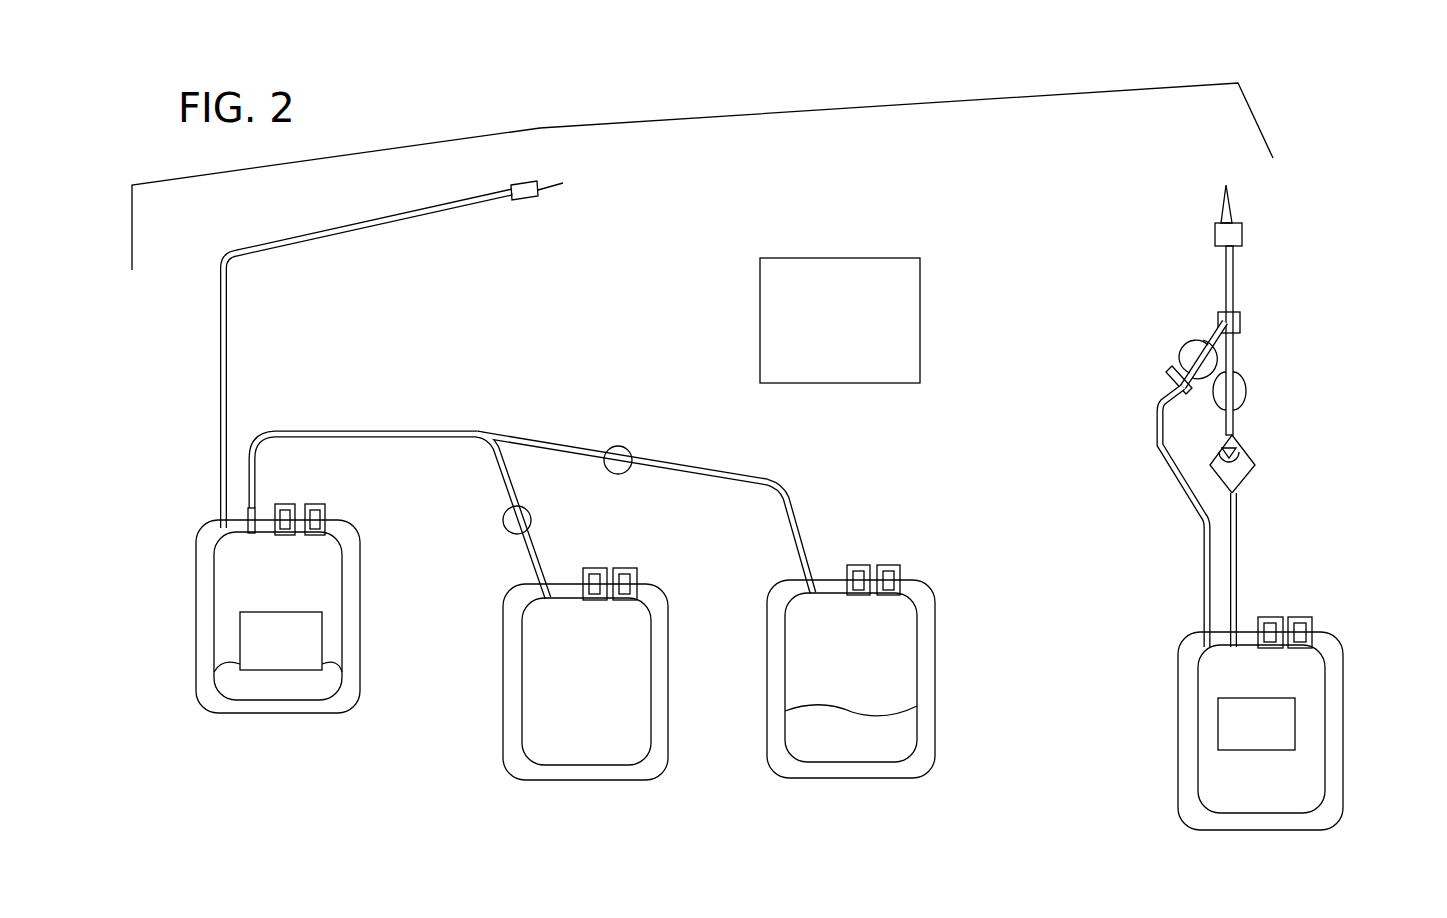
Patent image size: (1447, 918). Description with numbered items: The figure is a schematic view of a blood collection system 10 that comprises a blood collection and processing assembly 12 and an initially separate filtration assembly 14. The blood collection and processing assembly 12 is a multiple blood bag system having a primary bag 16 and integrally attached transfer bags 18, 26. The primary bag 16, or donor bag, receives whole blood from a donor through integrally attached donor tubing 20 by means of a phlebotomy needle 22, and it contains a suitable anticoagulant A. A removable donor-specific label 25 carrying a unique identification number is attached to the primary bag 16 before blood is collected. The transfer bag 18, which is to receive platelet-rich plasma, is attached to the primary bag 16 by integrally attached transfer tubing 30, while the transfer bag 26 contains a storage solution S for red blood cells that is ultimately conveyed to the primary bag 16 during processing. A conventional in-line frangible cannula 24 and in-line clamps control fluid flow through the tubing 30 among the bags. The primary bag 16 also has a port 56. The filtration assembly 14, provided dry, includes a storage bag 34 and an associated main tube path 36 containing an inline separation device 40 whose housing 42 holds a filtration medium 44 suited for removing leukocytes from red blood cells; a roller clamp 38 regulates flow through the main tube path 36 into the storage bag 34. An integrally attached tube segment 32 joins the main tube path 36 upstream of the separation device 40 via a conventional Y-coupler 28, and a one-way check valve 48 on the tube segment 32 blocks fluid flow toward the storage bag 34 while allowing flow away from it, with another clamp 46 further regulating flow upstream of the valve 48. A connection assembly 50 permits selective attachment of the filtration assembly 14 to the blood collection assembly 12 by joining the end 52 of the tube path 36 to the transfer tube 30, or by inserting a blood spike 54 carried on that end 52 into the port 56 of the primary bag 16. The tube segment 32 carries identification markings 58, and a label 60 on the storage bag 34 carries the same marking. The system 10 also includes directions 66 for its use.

The blood collection system 10 is at (702, 159).
The blood collection and processing assembly 12 is at (638, 290).
The filtration assembly 14 is at (1209, 507).
The primary bag 16 is at (322, 616).
The transfer bag 18 is at (623, 674).
The donor tubing 20 is at (368, 360).
The phlebotomy needle 22 is at (575, 206).
The in-line frangible cannula 24 is at (303, 493).
The donor-specific label 25 is at (408, 509).
The transfer bag 26 is at (883, 671).
The Y-coupler 28 is at (1285, 301).
The transfer tubing 30 is at (532, 480).
The tube segment 32 is at (1122, 517).
The storage bag 34 is at (1248, 723).
The main tube path 36 is at (1307, 340).
The clamp 38 is at (1287, 380).
The inline separation device 40 is at (1296, 435).
The housing 42 is at (1282, 438).
The filtration medium 44 is at (1295, 418).
The clamp 46 is at (1140, 354).
The one-way check valve 48 is at (1101, 381).
The connection assembly 50 is at (828, 403).
The end of the tube path 52 is at (1169, 236).
The blood spike 54 is at (1263, 204).
The port 56 is at (353, 499).
The identification markings 58 is at (1164, 696).
The label 60 is at (1248, 699).
The directions 66 is at (840, 296).
The anticoagulant A is at (331, 647).
The storage solution S is at (892, 715).